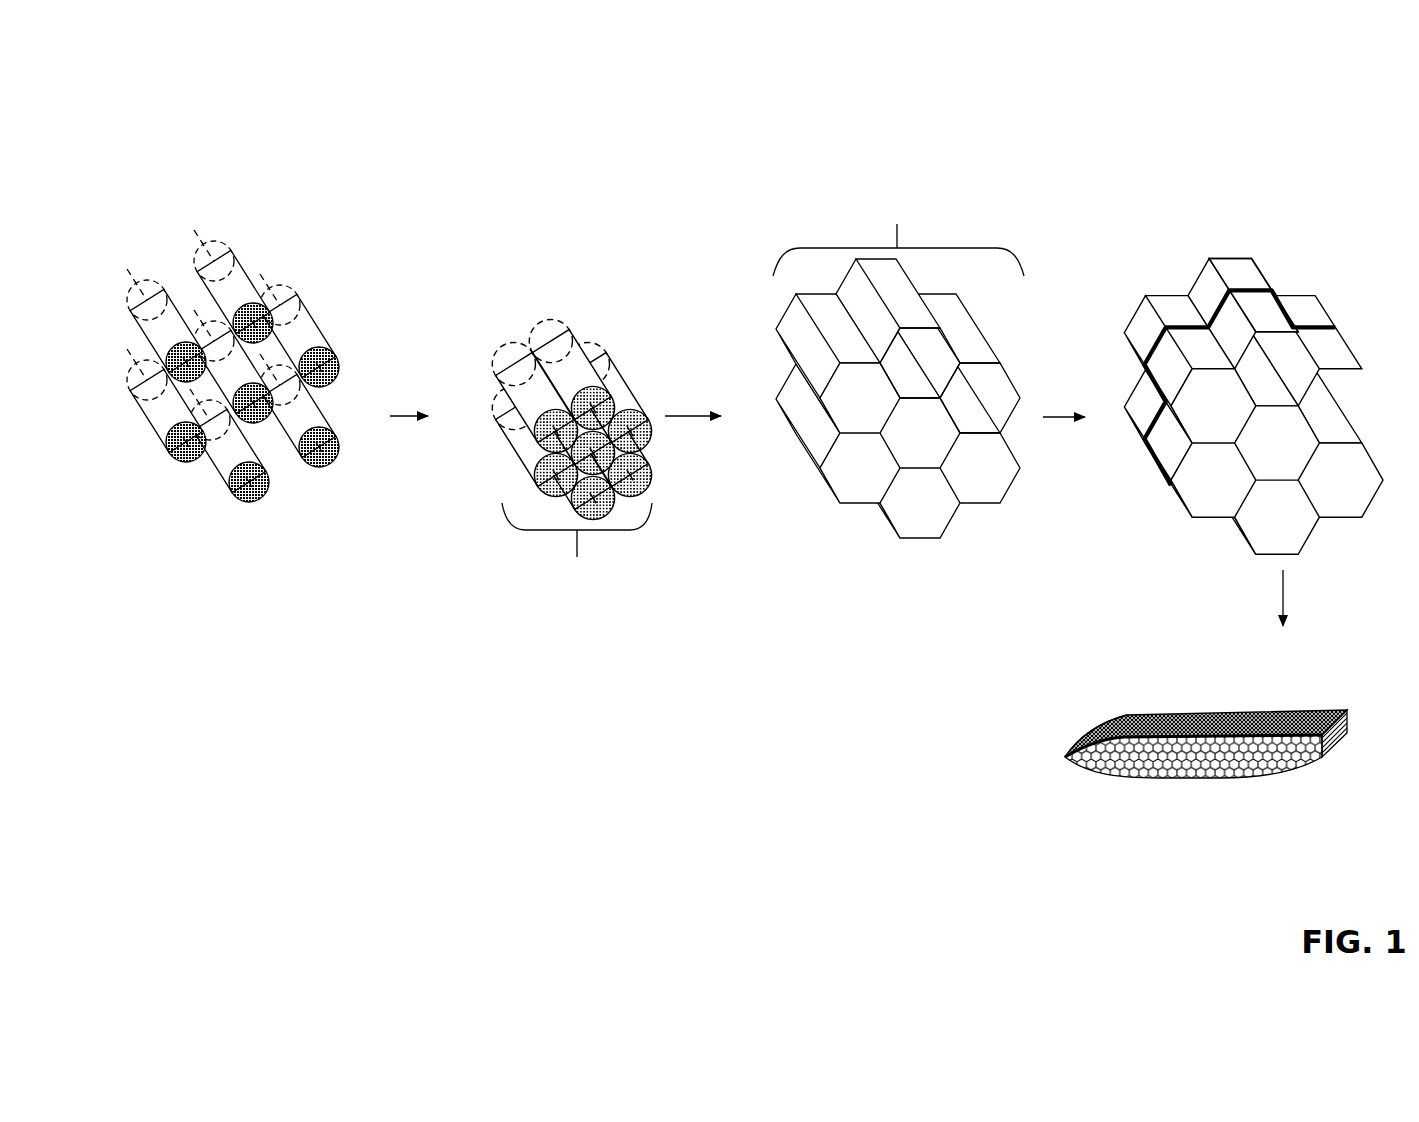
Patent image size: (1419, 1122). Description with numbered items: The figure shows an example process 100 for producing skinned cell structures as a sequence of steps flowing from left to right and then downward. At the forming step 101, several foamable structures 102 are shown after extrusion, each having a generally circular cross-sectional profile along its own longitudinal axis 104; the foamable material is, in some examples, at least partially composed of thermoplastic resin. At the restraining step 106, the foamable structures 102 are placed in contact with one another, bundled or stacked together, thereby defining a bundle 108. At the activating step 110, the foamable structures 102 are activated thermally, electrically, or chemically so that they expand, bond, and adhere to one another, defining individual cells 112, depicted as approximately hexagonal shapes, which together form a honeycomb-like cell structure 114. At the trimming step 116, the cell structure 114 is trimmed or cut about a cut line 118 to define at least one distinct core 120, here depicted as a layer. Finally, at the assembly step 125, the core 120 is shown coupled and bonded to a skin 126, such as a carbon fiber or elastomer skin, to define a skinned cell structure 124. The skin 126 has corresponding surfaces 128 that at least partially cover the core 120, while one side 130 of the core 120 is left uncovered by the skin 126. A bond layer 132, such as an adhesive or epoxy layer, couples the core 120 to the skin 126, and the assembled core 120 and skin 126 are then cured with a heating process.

The process 100 is at (242, 72).
The forming step 101 is at (276, 322).
The foamable structures 102 is at (330, 467).
The longitudinal axes 104 is at (195, 253).
The restraining step 106 is at (584, 406).
The bundle 108 is at (577, 546).
The activating step 110 is at (1078, 323).
The cells 112 is at (950, 357).
The cell structure 114 is at (1166, 270).
The trimming step 116 is at (1228, 437).
The cut line 118 is at (1253, 262).
The core 120 is at (1252, 272).
The skinned cell structure 124 is at (1179, 732).
The assembly step 125 is at (1112, 656).
The skin 126 is at (1210, 701).
The surfaces 128 is at (1272, 713).
The side 130 is at (1260, 778).
The bond layer 132 is at (1128, 716).